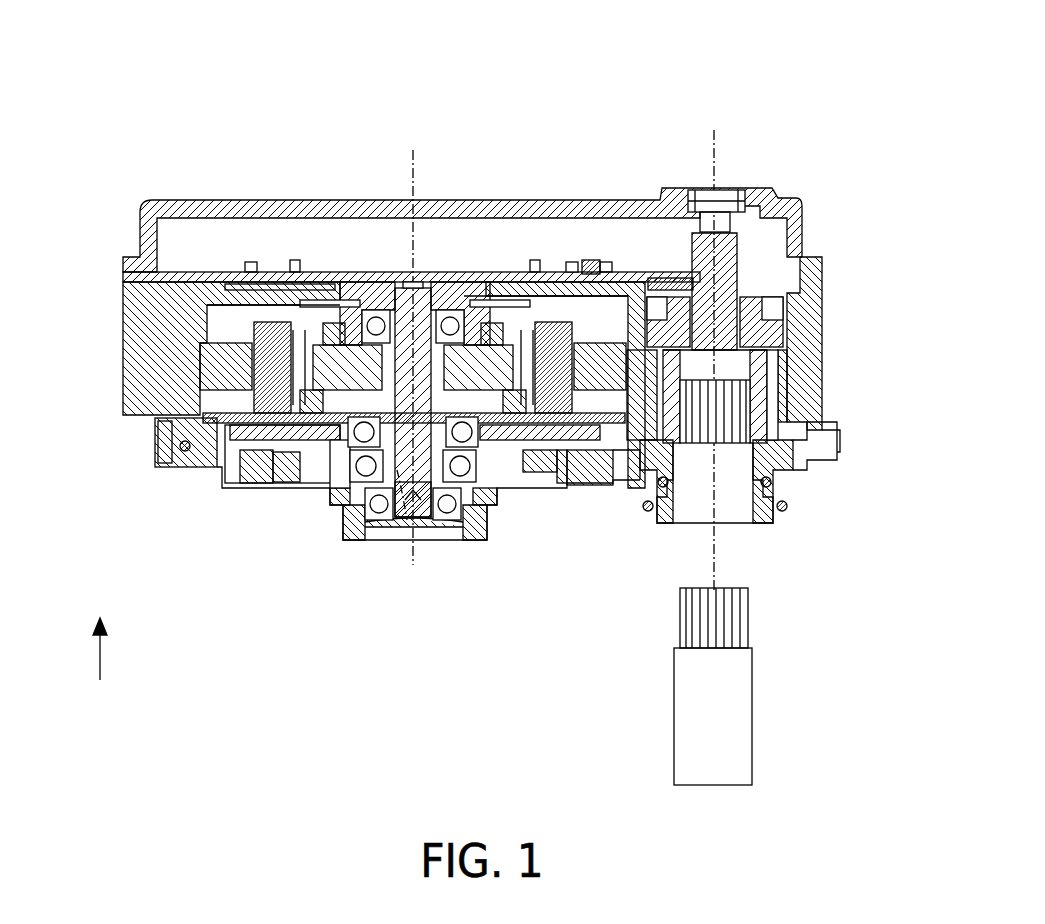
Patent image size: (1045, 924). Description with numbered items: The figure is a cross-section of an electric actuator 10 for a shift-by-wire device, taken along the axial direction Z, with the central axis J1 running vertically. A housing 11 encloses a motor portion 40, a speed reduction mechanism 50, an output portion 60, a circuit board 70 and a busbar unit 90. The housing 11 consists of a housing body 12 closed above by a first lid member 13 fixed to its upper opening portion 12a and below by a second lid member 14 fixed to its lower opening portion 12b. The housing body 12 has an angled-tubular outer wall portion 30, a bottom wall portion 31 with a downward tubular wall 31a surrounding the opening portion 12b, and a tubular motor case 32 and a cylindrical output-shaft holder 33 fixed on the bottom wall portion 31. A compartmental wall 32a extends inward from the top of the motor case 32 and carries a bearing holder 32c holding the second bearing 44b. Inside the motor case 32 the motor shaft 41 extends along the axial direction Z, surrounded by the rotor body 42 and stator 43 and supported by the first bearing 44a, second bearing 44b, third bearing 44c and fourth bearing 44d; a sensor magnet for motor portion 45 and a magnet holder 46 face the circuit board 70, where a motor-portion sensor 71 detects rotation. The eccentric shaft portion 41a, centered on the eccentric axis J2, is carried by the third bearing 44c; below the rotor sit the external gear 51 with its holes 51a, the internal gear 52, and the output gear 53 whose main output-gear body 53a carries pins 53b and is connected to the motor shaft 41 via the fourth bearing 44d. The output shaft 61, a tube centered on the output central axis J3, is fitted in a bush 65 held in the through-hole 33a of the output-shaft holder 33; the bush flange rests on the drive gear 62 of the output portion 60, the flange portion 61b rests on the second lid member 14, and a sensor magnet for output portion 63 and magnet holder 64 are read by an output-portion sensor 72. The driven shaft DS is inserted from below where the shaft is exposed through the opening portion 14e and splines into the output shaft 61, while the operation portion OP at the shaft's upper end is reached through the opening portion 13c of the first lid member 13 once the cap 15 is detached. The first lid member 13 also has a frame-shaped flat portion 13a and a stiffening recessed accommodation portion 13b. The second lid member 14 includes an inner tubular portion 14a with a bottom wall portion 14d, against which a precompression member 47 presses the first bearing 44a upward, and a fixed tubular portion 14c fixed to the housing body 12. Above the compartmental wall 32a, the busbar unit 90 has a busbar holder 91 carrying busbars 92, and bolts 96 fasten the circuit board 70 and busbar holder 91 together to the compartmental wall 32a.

The electric actuator 10 is at (781, 92).
The housing 11 is at (78, 207).
The housing body 12 is at (130, 312).
The opening portion 12a is at (158, 258).
The opening portion 12b is at (172, 445).
The first lid member 13 is at (140, 240).
The flat portion 13a is at (802, 237).
The recessed accommodation portion 13b is at (170, 228).
The opening portion 13c is at (745, 188).
The second lid member 14 is at (158, 432).
The inner tubular portion 14a is at (346, 515).
The fixed tubular portion 14c is at (840, 455).
The bottom wall portion 14d is at (417, 528).
The opening portion 14e is at (665, 525).
The cap 15 is at (704, 190).
The operation portion OP is at (718, 232).
The central axis J1 is at (410, 150).
The eccentric axis J2 is at (407, 520).
The output central axis J3 is at (714, 130).
The outer wall portion 30 is at (795, 322).
The bottom wall portion 31 is at (215, 420).
The tubular wall 31a is at (835, 440).
The motor case 32 is at (622, 330).
The compartmental wall 32a is at (252, 304).
The bearing holder 32c is at (500, 300).
The output-shaft holder 33 is at (768, 372).
The through-hole 33a is at (726, 425).
The motor portion 40 is at (190, 347).
The motor shaft 41 is at (423, 286).
The eccentric shaft portion 41a is at (385, 462).
The rotor body 42 is at (340, 378).
The stator 43 is at (275, 400).
The first bearing 44a is at (377, 505).
The second bearing 44b is at (374, 320).
The third bearing 44c is at (446, 508).
The fourth bearing 44d is at (462, 440).
The sensor magnet for motor portion 45 is at (345, 290).
The magnet holder 46 is at (475, 300).
The precompression member 47 is at (370, 520).
The speed reduction mechanism 50 is at (243, 452).
The external gear 51 is at (286, 468).
The holes 51a is at (538, 470).
The internal gear 52 is at (258, 470).
The output gear 53 is at (235, 440).
The main output-gear body 53a is at (545, 442).
The pins 53b is at (560, 478).
The output portion 60 is at (805, 330).
The output shaft 61 is at (765, 388).
The flange portion 61b is at (780, 470).
The drive gear 62 is at (622, 450).
The sensor magnet for output portion 63 is at (773, 320).
The magnet holder 64 is at (662, 300).
The bush 65 is at (772, 405).
The circuit board 70 is at (492, 300).
The motor-portion sensor 71 is at (335, 300).
The output-portion sensor 72 is at (668, 280).
The busbar unit 90 is at (590, 300).
The busbar holder 91 is at (280, 288).
The busbar 92 is at (296, 260).
The bolts 96 is at (572, 285).
The driven shaft DS is at (752, 712).
The axial direction Z is at (100, 633).